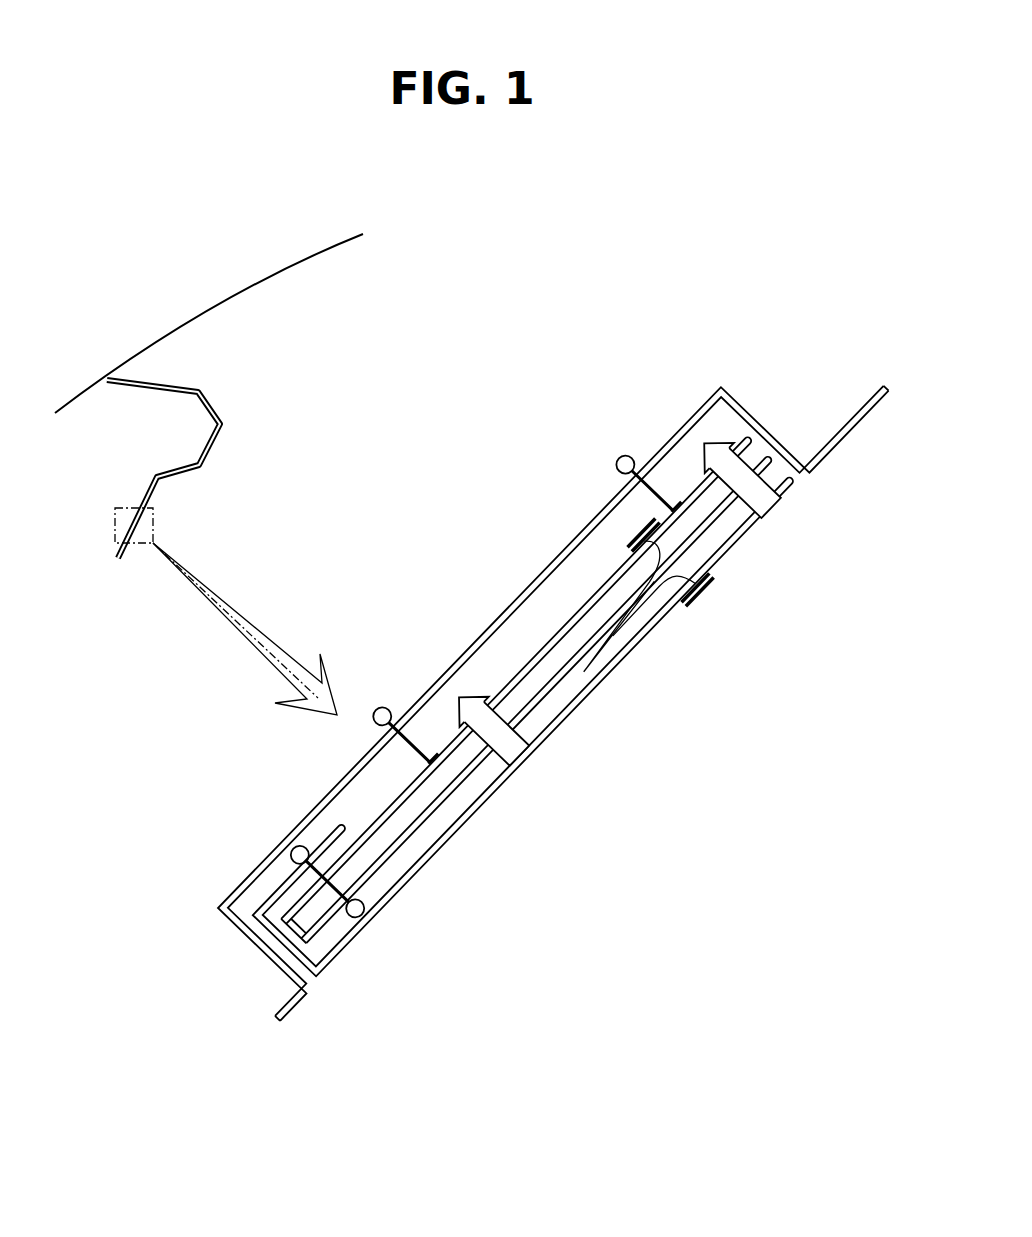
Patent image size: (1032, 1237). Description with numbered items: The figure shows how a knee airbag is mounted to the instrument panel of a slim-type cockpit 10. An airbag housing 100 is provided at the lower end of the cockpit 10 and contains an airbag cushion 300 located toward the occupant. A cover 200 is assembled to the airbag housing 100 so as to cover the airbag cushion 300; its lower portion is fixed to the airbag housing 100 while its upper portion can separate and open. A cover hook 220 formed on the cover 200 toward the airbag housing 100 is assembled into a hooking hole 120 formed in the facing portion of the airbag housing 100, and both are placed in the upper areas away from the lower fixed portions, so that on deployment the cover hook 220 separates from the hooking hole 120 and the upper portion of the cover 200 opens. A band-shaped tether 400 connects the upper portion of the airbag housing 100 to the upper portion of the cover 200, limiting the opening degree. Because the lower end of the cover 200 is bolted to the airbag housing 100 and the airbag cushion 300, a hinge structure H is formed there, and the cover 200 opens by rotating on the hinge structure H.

The slim-type cockpit 10 is at (232, 428).
The airbag housing 100 is at (618, 575).
The hooking hole 120 is at (712, 477).
The cover 200 is at (410, 877).
The cover hook 220 is at (718, 453).
The airbag cushion 300 is at (565, 690).
The tether 400 is at (620, 632).
The hinge structure H is at (334, 972).